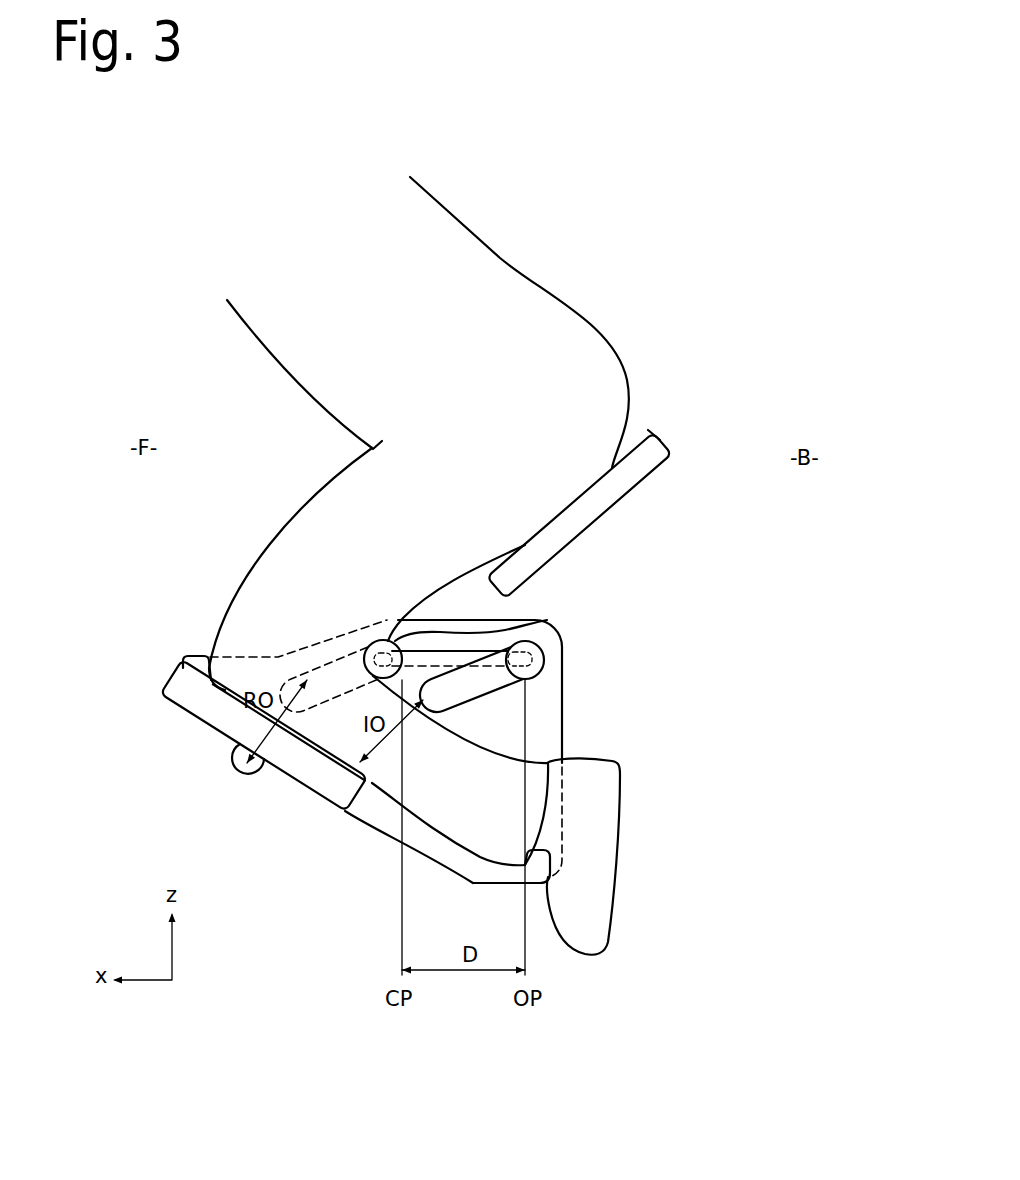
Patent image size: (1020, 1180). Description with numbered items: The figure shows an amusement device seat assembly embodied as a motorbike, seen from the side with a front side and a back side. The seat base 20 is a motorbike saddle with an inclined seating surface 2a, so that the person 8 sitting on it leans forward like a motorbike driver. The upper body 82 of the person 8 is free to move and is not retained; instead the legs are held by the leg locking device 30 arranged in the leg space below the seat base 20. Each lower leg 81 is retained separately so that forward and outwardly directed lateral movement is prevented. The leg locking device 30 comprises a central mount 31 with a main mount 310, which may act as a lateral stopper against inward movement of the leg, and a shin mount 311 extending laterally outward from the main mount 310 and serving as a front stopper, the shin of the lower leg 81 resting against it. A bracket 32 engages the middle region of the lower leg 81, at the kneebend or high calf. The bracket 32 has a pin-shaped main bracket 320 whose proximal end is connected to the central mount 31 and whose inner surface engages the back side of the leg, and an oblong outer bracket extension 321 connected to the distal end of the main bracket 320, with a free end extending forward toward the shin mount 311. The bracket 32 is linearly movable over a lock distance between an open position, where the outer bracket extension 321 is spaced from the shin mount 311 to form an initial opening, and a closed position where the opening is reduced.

The person 8 is at (297, 337).
The upper body 82 is at (477, 268).
The lower leg 81 is at (470, 815).
The seating surface 2a is at (640, 437).
The seat base 20 is at (627, 482).
The leg locking device 30 is at (308, 733).
The central mount 31 is at (203, 655).
The shin mount 311 is at (193, 702).
The outer bracket extension 321 is at (347, 677).
The bracket 32 is at (555, 653).
The main bracket 320 is at (540, 622).
The main mount 310 is at (545, 708).